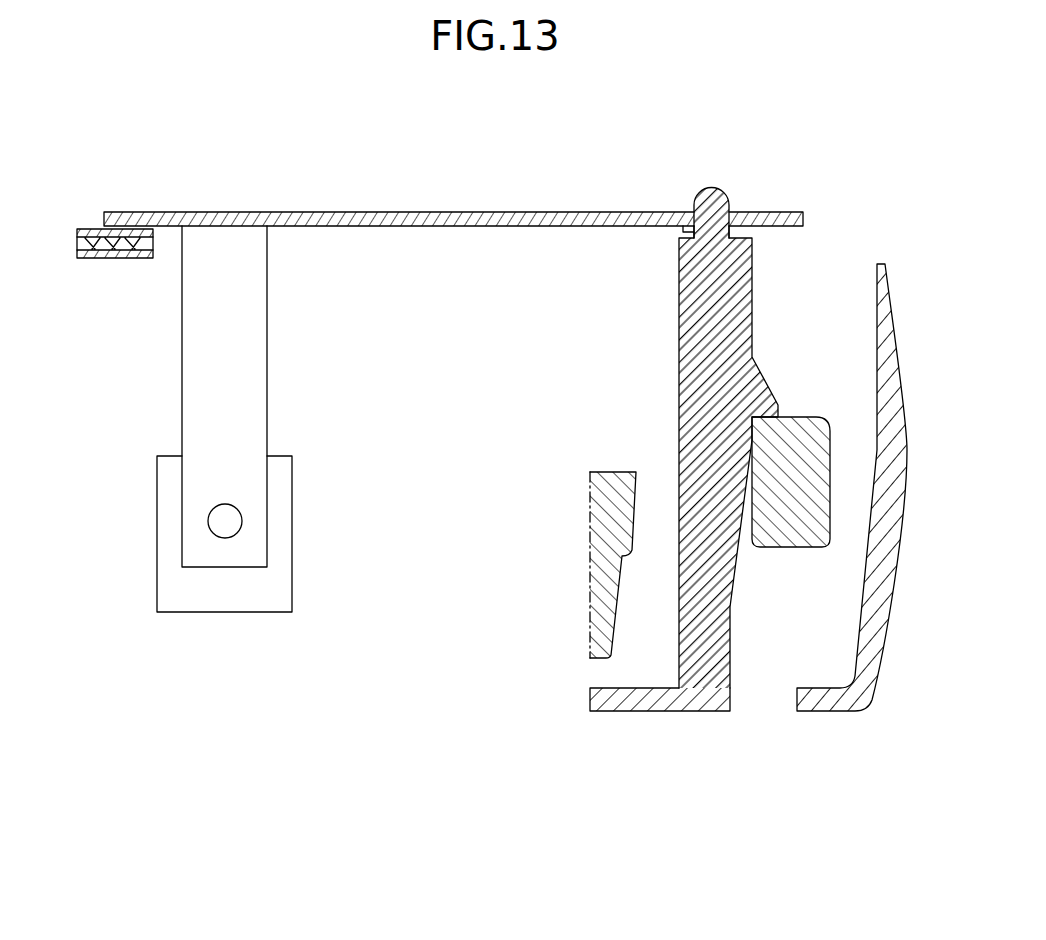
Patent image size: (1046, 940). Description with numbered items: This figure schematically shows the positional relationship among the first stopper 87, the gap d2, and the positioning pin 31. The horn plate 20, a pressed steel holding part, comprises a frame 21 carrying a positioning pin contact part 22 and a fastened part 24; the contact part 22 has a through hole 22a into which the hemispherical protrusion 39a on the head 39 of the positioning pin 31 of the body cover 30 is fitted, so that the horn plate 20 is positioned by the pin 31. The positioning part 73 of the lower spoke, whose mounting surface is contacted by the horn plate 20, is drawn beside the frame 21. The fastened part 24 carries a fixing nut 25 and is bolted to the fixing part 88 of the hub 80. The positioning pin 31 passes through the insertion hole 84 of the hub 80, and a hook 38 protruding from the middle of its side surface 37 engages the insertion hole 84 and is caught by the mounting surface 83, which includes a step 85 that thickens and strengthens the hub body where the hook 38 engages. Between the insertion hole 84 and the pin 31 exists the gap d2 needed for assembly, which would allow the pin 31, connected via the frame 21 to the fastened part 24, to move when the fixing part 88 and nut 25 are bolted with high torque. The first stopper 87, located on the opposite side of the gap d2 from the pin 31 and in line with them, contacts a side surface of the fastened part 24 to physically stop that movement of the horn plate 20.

The horn plate 20 is at (463, 196).
The frame 21 is at (355, 211).
The positioning pin contact part 22 is at (748, 211).
The through hole 22a is at (695, 214).
The positioning part 73 is at (114, 260).
The fastened part 24 is at (252, 484).
The fixing nut 25 is at (243, 521).
The first stopper 87 is at (158, 462).
The fixing part 88 is at (232, 605).
The positioning pin 31 is at (668, 303).
The head 39 is at (712, 237).
The hemispherical protrusion 39a is at (716, 191).
The side surface 37 is at (753, 341).
The hook 38 is at (770, 403).
The body cover 30 is at (712, 720).
The hub 80 is at (812, 556).
The mounting surface 83 is at (605, 471).
The insertion hole 84 is at (659, 426).
The step 85 is at (792, 548).
The gap d2 is at (678, 468).